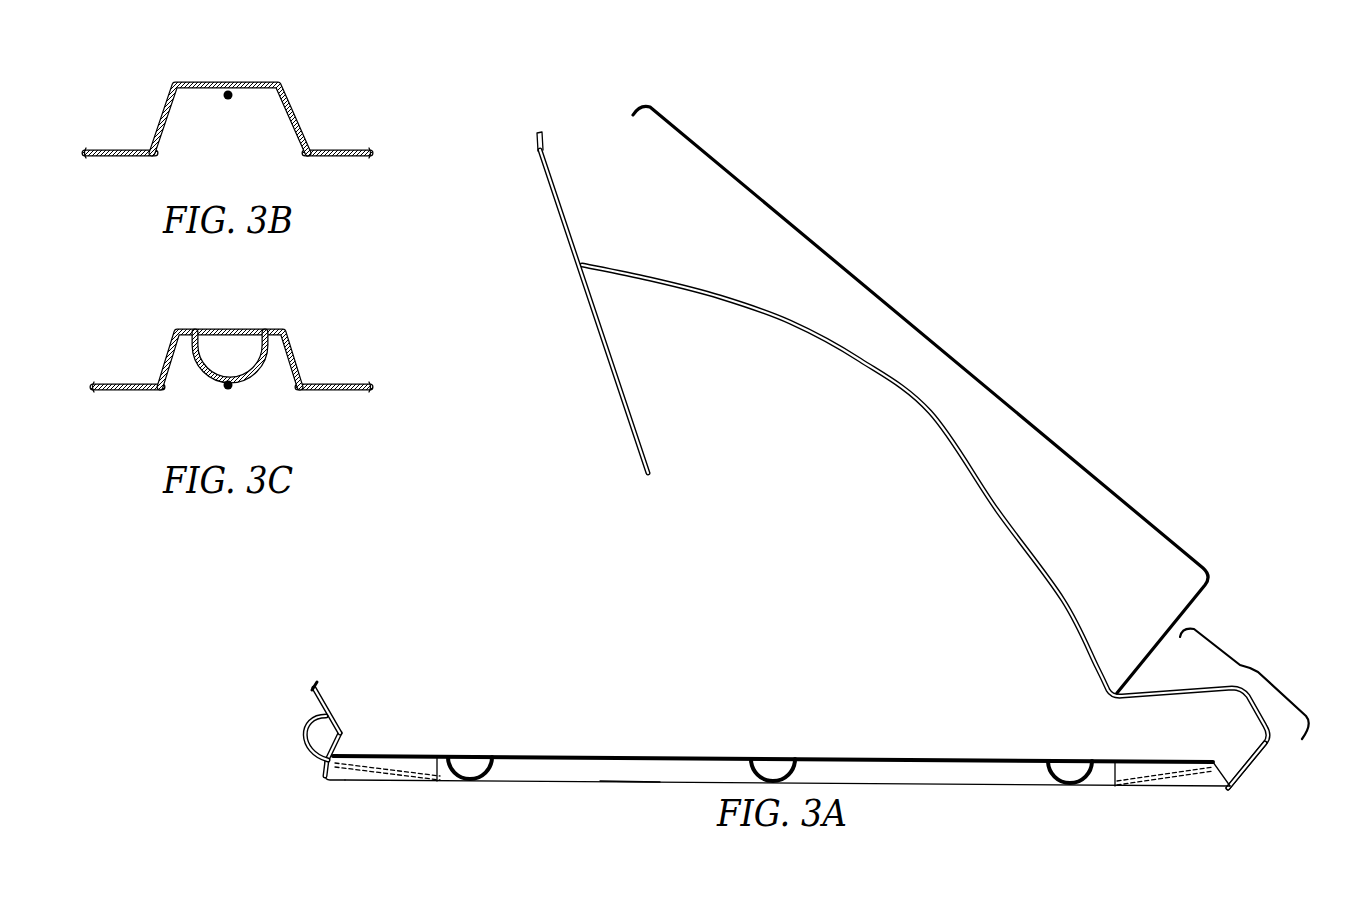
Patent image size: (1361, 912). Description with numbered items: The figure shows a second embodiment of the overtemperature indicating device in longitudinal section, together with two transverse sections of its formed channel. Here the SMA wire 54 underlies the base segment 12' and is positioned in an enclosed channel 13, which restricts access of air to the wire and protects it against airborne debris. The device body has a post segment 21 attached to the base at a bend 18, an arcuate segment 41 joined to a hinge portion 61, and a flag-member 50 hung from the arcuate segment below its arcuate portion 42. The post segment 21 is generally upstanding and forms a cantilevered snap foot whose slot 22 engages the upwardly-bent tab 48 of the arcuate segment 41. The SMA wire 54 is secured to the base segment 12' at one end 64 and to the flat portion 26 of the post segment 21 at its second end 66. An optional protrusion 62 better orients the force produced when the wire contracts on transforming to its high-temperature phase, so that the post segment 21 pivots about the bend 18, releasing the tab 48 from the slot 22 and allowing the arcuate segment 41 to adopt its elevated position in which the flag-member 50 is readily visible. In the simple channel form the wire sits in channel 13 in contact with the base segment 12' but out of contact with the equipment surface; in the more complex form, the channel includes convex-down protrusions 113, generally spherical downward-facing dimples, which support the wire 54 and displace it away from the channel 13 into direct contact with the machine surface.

In FIG. 3B, the base segment 12' is at (235, 127).
In FIG. 3C, the base segment 12' is at (241, 356).
In FIG. 3A, the base segment 12' is at (784, 793).
In FIG. 3B, the channel 13 is at (243, 85).
In FIG. 3C, the channel 13 is at (268, 332).
In FIG. 3A, the channel 13 is at (547, 757).
In FIG. 3A, the bend 18 is at (325, 776).
In FIG. 3A, the post segment 21 is at (297, 705).
In FIG. 3A, the slot 22 is at (340, 733).
In FIG. 3A, the flat portion 26 is at (318, 688).
In FIG. 3A, the arcuate segment 41 is at (950, 350).
In FIG. 3A, the arcuate portion 42 is at (950, 428).
In FIG. 3A, the tab 48 is at (541, 140).
In FIG. 3A, the flag-member 50 is at (628, 420).
In FIG. 3B, the SMA wire 54 is at (228, 100).
In FIG. 3C, the SMA wire 54 is at (228, 390).
In FIG. 3A, the SMA wire 54 is at (627, 782).
In FIG. 3A, the hinge portion 61 is at (1250, 667).
In FIG. 3A, the protrusion 62 is at (318, 757).
In FIG. 3A, the end 64 is at (1222, 771).
In FIG. 3A, the second end 66 is at (318, 697).
In FIG. 3C, the protrusion 113 is at (205, 345).
In FIG. 3A, the protrusion 113 is at (468, 757).